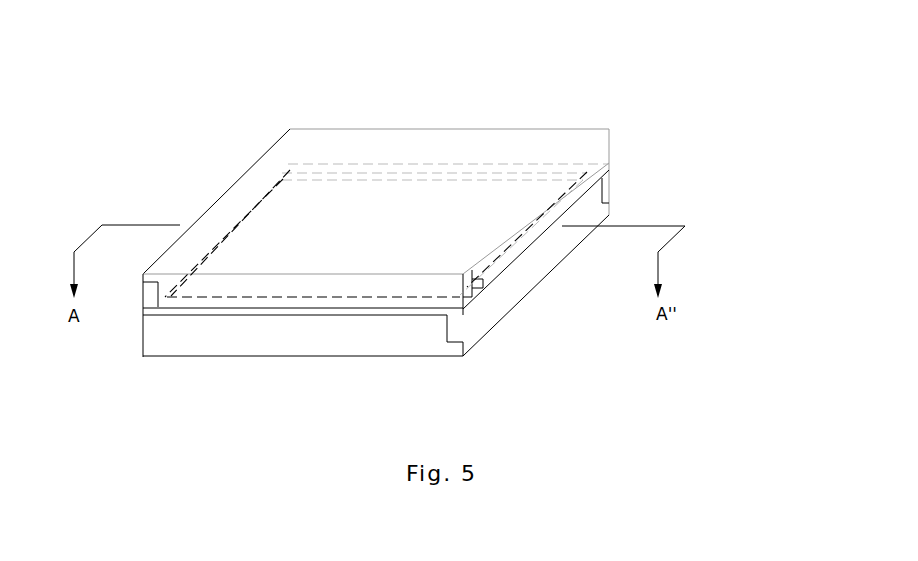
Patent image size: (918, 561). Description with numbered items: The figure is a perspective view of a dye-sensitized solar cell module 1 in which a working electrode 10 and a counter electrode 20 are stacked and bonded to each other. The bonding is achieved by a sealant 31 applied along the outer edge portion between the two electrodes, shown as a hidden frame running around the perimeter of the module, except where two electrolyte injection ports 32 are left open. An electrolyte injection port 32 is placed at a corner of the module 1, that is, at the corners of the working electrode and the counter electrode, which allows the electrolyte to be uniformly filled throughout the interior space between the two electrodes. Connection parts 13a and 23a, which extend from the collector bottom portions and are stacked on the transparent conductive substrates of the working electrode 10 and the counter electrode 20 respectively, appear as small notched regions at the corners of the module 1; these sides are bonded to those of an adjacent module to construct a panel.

The solar cell module 1 is at (633, 97).
The counter electrode 20 is at (554, 119).
The working electrode 10 is at (565, 270).
The connection part 13a is at (607, 192).
The connection part 23a is at (147, 293).
The sealant 31 is at (461, 167).
The electrolyte injection port 32 is at (481, 295).